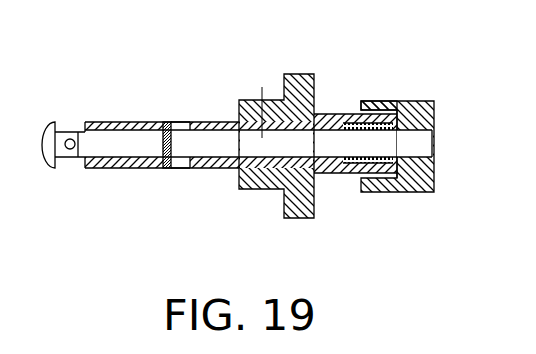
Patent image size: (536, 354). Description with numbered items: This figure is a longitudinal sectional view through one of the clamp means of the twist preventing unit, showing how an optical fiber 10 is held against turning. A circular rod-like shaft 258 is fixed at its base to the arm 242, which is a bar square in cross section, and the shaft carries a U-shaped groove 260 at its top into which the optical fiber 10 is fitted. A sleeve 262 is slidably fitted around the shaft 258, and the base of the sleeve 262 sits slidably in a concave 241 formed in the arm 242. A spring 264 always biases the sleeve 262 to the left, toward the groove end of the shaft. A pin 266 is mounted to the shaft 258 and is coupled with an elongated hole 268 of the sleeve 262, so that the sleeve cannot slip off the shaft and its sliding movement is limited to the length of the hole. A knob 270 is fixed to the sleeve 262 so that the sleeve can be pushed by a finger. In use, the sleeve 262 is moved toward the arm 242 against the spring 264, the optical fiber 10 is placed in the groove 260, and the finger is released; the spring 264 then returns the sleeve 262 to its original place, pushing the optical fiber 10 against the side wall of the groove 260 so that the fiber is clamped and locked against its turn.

The optical fiber 10 is at (70, 149).
The concave 241 is at (390, 103).
The arm 242 is at (415, 101).
The shaft 258 is at (207, 132).
The U-shaped groove 260 is at (61, 121).
The sleeve 262 is at (118, 122).
The spring 264 is at (353, 116).
The pin 266 is at (165, 122).
The elongated hole 268 is at (181, 123).
The knob 270 is at (278, 76).